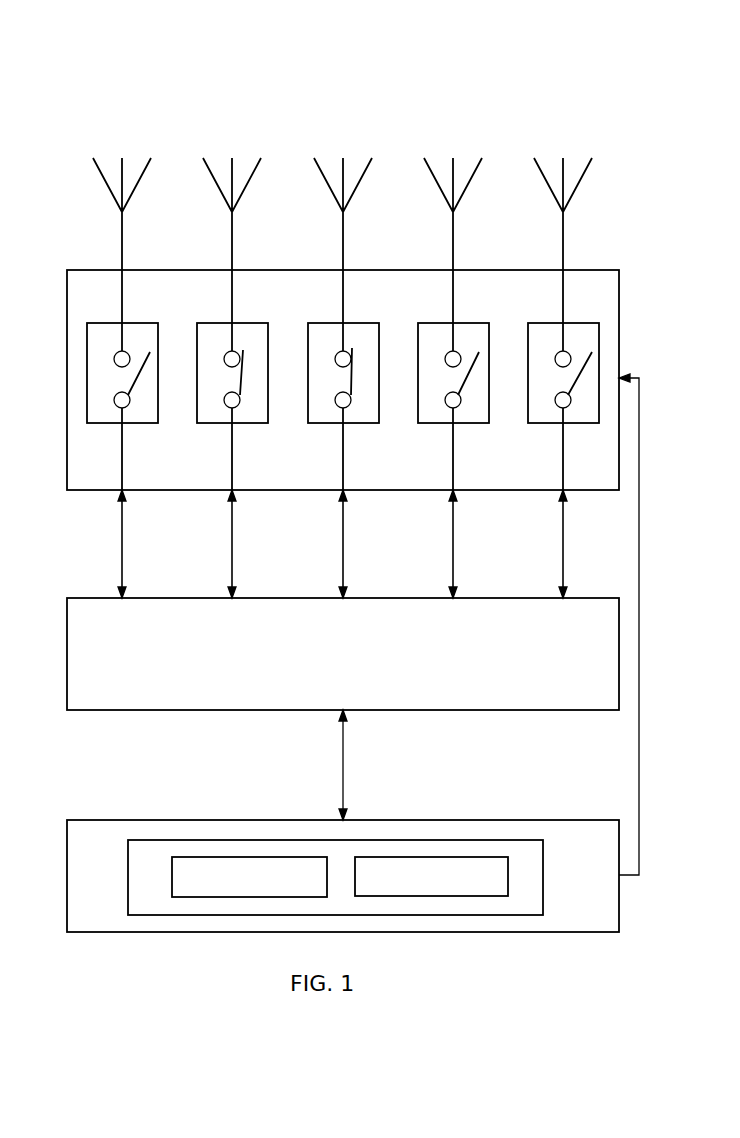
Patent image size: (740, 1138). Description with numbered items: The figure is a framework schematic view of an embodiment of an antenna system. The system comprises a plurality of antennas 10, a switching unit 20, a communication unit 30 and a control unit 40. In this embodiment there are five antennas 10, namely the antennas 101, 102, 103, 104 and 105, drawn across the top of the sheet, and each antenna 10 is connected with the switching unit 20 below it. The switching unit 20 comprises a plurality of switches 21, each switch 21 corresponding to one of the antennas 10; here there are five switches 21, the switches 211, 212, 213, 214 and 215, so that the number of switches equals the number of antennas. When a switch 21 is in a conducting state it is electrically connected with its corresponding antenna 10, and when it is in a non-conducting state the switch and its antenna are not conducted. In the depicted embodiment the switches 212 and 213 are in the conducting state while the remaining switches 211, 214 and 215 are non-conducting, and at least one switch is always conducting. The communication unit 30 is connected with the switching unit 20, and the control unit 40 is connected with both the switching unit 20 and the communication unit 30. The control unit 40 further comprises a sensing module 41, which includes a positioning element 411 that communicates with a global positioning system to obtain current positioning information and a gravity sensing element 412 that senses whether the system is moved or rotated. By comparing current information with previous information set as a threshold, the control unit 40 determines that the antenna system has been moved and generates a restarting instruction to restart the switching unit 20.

The antennas 10 is at (572, 70).
The antenna 101 is at (100, 173).
The antenna 102 is at (210, 173).
The antenna 103 is at (321, 173).
The antenna 104 is at (431, 173).
The antenna 105 is at (541, 173).
The switching unit 20 is at (606, 303).
The switch 21 is at (106, 530).
The switch 211 is at (100, 423).
The switch 212 is at (210, 423).
The switch 213 is at (321, 423).
The switch 214 is at (431, 423).
The switch 215 is at (541, 423).
The communication unit 30 is at (358, 670).
The control unit 40 is at (167, 820).
The sensing module 41 is at (442, 842).
The positioning element 411 is at (272, 892).
The gravity sensing element 412 is at (455, 891).